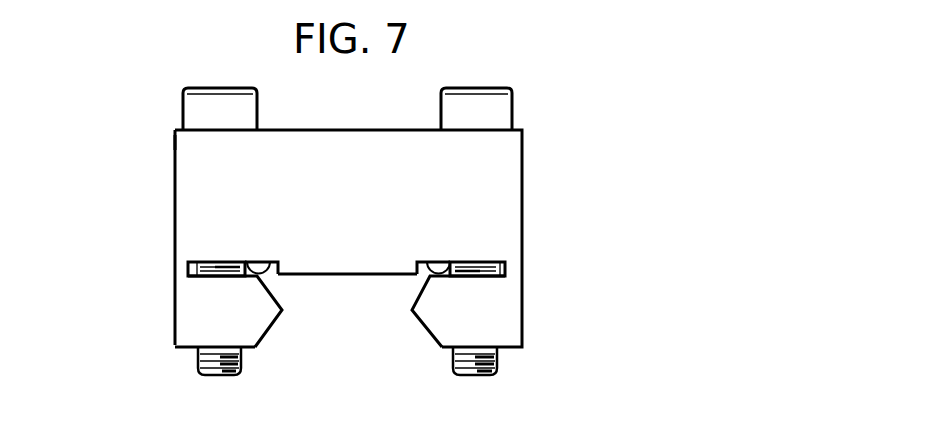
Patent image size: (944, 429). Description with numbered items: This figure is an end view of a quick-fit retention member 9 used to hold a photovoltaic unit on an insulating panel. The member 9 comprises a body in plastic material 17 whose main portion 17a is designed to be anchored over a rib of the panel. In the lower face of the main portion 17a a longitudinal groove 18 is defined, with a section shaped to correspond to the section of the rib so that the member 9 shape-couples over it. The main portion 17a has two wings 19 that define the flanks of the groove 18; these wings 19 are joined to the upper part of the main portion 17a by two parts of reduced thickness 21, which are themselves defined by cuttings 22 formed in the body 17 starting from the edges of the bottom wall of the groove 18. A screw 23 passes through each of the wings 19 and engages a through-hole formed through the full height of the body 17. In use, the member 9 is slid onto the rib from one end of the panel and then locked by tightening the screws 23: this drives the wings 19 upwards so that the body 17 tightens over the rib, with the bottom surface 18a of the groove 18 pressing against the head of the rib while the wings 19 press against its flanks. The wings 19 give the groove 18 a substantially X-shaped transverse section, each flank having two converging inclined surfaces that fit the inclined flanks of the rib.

The quick-fit retention member 9 is at (142, 133).
The body in plastic material 17 is at (527, 167).
The main portion 17a is at (175, 207).
The longitudinal groove 18 is at (405, 332).
The bottom surface of the groove 18a is at (342, 276).
The wings 19 is at (198, 312).
The parts of reduced thickness 21 is at (181, 268).
The cuttings 22 is at (270, 261).
The screw 23 is at (210, 88).